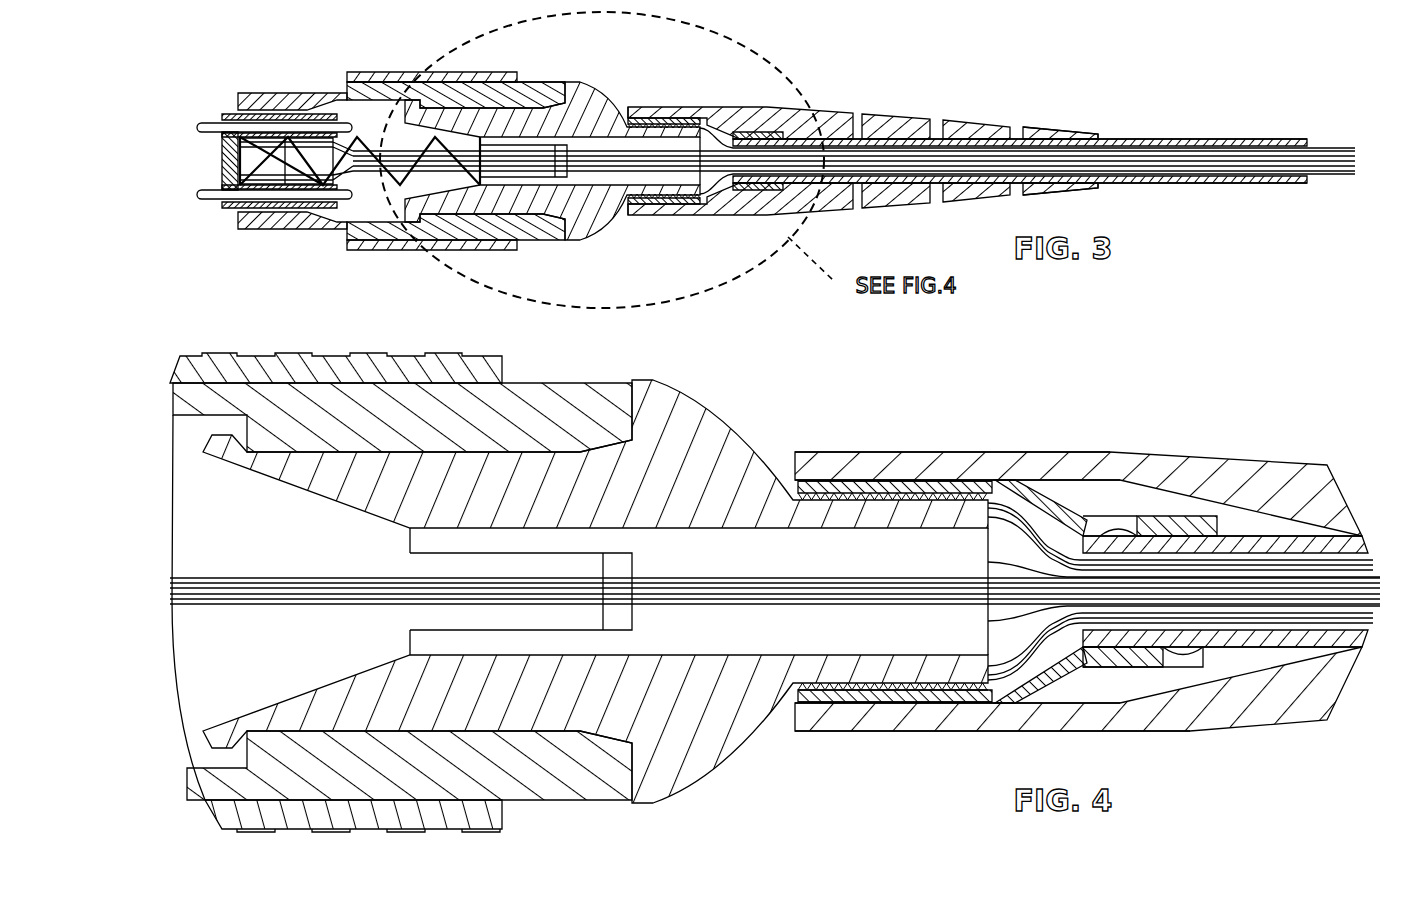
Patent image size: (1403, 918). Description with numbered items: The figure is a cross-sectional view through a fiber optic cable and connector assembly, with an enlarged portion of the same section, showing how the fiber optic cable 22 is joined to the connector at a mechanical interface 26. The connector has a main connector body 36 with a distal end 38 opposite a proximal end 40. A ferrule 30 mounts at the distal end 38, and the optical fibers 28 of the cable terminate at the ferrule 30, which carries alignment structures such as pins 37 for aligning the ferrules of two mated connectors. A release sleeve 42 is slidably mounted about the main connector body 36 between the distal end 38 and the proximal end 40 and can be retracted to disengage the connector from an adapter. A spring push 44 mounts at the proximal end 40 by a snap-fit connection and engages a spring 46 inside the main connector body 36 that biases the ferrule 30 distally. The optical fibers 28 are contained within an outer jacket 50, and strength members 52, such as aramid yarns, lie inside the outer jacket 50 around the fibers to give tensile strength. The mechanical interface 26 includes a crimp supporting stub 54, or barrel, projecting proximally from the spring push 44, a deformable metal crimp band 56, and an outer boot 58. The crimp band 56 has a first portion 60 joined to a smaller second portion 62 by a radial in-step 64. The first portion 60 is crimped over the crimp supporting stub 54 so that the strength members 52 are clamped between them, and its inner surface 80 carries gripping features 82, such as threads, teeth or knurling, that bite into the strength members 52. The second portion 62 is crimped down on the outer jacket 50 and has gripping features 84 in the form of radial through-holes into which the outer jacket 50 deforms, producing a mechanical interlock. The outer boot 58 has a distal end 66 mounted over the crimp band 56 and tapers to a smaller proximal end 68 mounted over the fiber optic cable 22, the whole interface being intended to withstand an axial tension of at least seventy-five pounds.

In FIG. 3, the fiber optic cable 22 is at (1186, 138).
In FIG. 3, the mechanical interface 26 is at (712, 76).
In FIG. 4, the mechanical interface 26 is at (815, 428).
In FIG. 3, the optical fibers 28 is at (380, 153).
In FIG. 4, the optical fibers 28 is at (680, 602).
In FIG. 3, the ferrule 30 is at (222, 117).
In FIG. 3, the main connector body 36 is at (540, 82).
In FIG. 3, the pins 37 is at (200, 198).
In FIG. 3, the distal end 38 is at (238, 102).
In FIG. 3, the proximal end 40 is at (565, 84).
In FIG. 4, the proximal end 40 is at (632, 398).
In FIG. 3, the release sleeve 42 is at (470, 72).
In FIG. 4, the release sleeve 42 is at (437, 354).
In FIG. 3, the spring push 44 is at (600, 96).
In FIG. 4, the spring push 44 is at (722, 418).
In FIG. 3, the spring 46 is at (408, 198).
In FIG. 3, the outer jacket 50 is at (1260, 140).
In FIG. 4, the outer jacket 50 is at (1315, 643).
In FIG. 3, the strength members 52 is at (730, 139).
In FIG. 4, the strength members 52 is at (1042, 650).
In FIG. 3, the crimp supporting stub 54 is at (664, 161).
In FIG. 4, the crimp supporting stub 54 is at (880, 498).
In FIG. 4, the crimp band 56 is at (972, 480).
In FIG. 3, the outer boot 58 is at (883, 115).
In FIG. 4, the outer boot 58 is at (1110, 452).
In FIG. 4, the first portion 60 is at (850, 480).
In FIG. 3, the second portion 62 is at (758, 161).
In FIG. 4, the second portion 62 is at (1178, 512).
In FIG. 4, the radial in-step 64 is at (1053, 498).
In FIG. 3, the distal end 66 is at (630, 107).
In FIG. 3, the proximal end 68 is at (1098, 137).
In FIG. 4, the inner surface 80 is at (908, 492).
In FIG. 4, the gripping features 82 is at (884, 693).
In FIG. 4, the gripping features 84 is at (1210, 660).